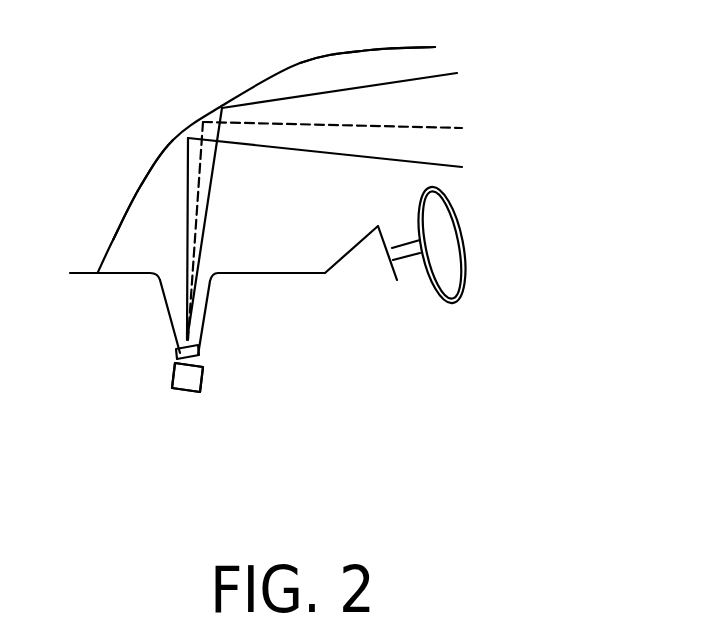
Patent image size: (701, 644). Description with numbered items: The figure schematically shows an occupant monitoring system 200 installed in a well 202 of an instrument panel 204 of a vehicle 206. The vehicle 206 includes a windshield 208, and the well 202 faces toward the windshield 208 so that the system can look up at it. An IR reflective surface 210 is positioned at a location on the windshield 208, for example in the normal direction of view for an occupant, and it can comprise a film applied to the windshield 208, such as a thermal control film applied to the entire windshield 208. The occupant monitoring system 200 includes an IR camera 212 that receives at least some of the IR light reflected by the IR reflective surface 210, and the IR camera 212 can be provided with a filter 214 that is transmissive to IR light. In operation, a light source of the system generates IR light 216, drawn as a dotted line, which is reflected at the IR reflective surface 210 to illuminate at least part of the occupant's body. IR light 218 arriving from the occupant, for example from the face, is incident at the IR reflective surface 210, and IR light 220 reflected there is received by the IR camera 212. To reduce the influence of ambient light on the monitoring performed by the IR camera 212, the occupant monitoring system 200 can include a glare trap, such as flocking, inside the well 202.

The occupant monitoring system 200 is at (185, 397).
The well 202 is at (168, 308).
The instrument panel 204 is at (335, 322).
The vehicle 206 is at (633, 93).
The windshield 208 is at (168, 150).
The IR reflective surface 210 is at (145, 183).
The IR camera 212 is at (177, 373).
The filter 214 is at (180, 360).
The IR light 216 is at (440, 128).
The IR light 218 is at (432, 77).
The IR light 220 is at (208, 208).